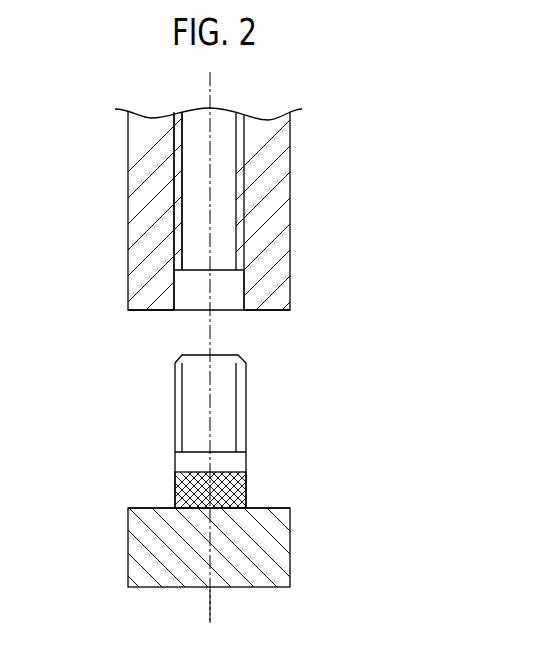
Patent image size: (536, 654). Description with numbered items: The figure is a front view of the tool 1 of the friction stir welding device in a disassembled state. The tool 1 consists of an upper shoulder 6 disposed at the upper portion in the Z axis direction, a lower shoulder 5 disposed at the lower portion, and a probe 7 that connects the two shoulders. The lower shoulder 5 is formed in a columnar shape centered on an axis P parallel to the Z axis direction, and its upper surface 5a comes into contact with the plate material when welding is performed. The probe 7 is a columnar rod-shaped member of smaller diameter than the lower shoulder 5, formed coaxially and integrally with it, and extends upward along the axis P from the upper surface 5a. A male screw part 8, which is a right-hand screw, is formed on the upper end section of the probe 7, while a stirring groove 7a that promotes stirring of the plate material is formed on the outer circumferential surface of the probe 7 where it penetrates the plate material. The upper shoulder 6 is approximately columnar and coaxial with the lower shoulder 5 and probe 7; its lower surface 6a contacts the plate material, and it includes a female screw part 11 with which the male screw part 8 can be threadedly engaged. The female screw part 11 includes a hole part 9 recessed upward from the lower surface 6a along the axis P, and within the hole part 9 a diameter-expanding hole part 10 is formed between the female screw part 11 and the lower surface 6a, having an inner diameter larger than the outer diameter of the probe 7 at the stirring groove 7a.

The tool 1 is at (388, 268).
The lower shoulder 5 is at (280, 548).
The upper surface 5a is at (270, 508).
The upper shoulder 6 is at (281, 182).
The lower surface 6a is at (284, 310).
The probe 7 is at (237, 435).
The stirring groove 7a is at (186, 493).
The male screw part 8 is at (246, 390).
The hole part 9 is at (177, 254).
The diameter-expanding hole part 10 is at (243, 287).
The female screw part 11 is at (172, 160).
The axis P is at (210, 607).